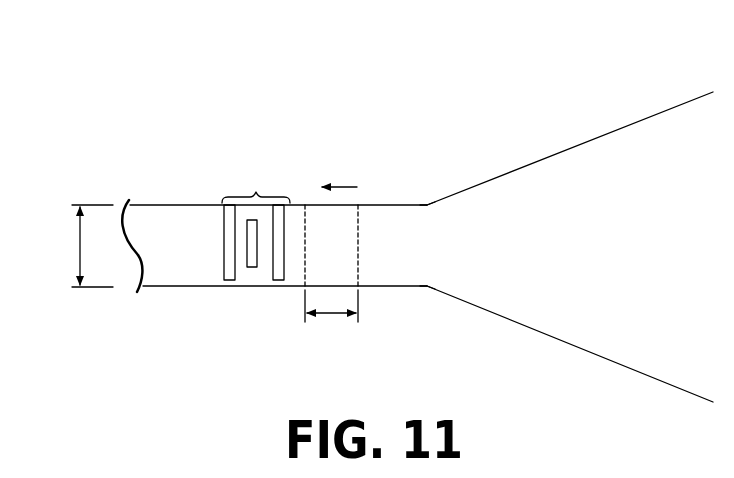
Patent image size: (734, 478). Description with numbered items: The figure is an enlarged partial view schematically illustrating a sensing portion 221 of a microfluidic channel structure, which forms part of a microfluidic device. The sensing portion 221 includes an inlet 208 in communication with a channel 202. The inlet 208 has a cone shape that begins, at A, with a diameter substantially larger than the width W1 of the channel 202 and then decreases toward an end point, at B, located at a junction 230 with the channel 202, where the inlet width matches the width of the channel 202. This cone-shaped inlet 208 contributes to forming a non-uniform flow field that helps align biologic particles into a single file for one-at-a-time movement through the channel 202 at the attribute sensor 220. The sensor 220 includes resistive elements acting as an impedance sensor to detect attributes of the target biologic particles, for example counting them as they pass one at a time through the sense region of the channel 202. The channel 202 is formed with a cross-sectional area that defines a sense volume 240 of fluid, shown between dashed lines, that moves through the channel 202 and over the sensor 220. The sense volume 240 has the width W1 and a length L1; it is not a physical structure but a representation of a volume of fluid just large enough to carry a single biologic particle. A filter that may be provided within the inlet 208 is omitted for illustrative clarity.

The channel 202 is at (185, 205).
The inlet 208 is at (583, 143).
The attribute sensor 220 is at (256, 192).
The sensing portion 221 is at (299, 85).
The junction 230 is at (422, 196).
The sense volume 240 is at (345, 235).
The width W1 is at (77, 246).
The length L1 is at (331, 321).
The beginning point of inlet A is at (705, 91).
The end point of inlet B is at (437, 197).